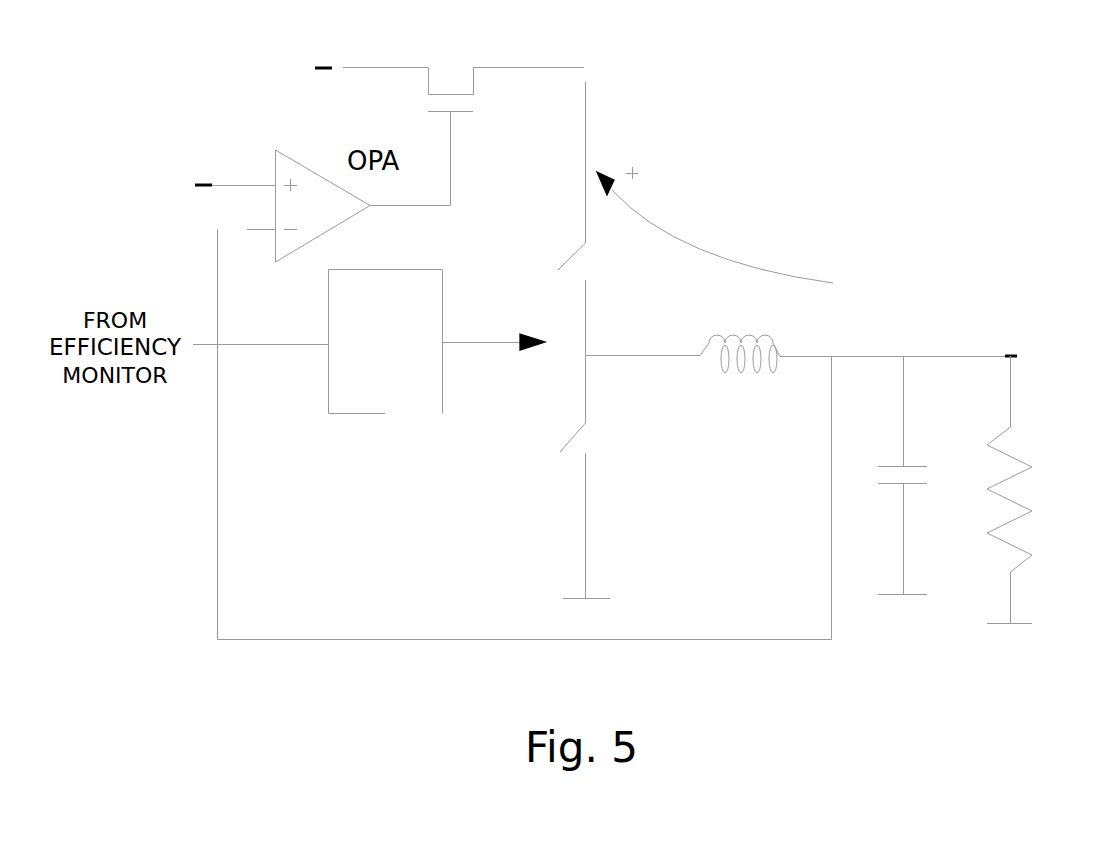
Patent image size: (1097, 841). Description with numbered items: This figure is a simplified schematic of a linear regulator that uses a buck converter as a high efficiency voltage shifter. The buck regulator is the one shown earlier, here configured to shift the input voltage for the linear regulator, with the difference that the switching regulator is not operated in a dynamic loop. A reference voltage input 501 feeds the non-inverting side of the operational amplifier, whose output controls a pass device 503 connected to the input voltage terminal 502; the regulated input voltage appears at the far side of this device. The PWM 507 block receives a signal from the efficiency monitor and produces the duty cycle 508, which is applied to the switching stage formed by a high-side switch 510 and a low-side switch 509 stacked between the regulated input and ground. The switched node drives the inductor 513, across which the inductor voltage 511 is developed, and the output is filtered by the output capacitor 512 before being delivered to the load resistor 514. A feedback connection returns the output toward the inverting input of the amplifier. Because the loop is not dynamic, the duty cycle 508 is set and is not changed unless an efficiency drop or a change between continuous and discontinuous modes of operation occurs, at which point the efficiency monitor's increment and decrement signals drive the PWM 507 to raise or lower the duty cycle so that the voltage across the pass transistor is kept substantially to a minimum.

The reference voltage input VREF 501 is at (212, 186).
The input voltage terminal VIN 502 is at (342, 68).
The pass transistor / input regulator 503 is at (448, 72).
The PWM 507 is at (420, 413).
The duty cycle 508 is at (465, 342).
The low-side switch 509 is at (590, 445).
The high-side switch 510 is at (583, 258).
The inductor voltage VL 511 is at (690, 200).
The output capacitor C 512 is at (895, 485).
The inductor L 513 is at (782, 352).
The load resistor 514 is at (1032, 452).